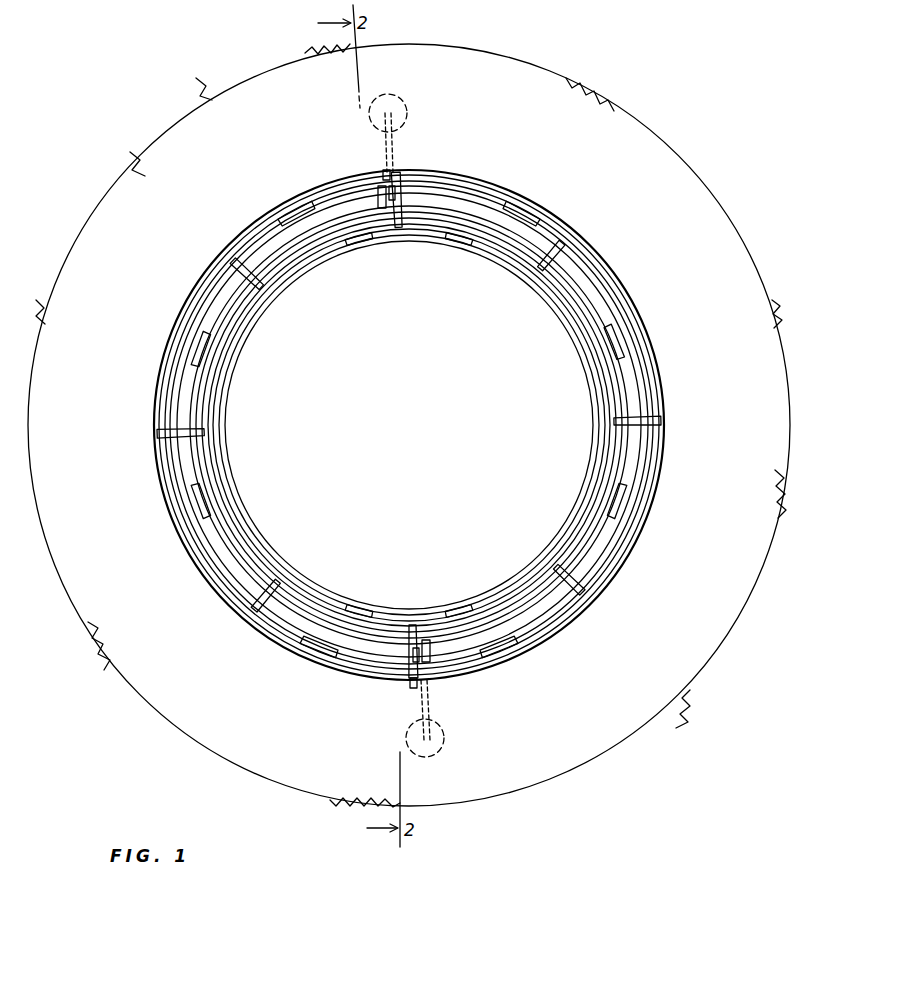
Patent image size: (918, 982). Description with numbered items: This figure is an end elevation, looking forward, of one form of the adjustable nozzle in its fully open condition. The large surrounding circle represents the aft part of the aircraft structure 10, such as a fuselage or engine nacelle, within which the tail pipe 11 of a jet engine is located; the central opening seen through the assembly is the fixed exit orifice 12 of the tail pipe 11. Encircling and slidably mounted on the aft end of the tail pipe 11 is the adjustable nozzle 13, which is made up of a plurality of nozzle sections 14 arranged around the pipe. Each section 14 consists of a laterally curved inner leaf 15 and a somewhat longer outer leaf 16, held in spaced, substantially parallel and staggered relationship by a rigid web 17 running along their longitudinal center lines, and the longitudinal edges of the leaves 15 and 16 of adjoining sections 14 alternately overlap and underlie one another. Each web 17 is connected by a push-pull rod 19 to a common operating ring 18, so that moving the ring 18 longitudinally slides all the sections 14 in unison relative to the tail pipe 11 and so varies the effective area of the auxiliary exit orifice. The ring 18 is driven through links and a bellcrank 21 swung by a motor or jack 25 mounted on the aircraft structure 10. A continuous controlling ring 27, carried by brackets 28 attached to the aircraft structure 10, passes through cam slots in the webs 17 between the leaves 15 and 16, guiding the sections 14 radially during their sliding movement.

The aircraft structure 10 is at (622, 148).
The tail pipe 11 is at (358, 242).
The exit orifice 12 is at (401, 406).
The adjustable nozzle 13 is at (582, 342).
The nozzle section 14 is at (603, 286).
The inner leaf 15 is at (520, 262).
The outer leaf 16 is at (536, 220).
The web 17 is at (566, 250).
The operating ring 18 is at (622, 374).
The push-pull rod 19 is at (402, 193).
The bellcrank 21 is at (394, 139).
The motor or jack 25 is at (405, 106).
The controlling ring 27 is at (435, 216).
The bracket 28 is at (378, 172).